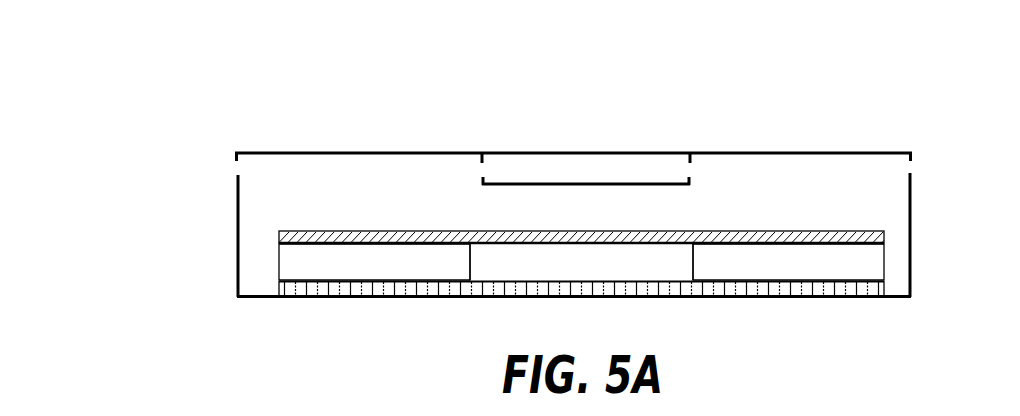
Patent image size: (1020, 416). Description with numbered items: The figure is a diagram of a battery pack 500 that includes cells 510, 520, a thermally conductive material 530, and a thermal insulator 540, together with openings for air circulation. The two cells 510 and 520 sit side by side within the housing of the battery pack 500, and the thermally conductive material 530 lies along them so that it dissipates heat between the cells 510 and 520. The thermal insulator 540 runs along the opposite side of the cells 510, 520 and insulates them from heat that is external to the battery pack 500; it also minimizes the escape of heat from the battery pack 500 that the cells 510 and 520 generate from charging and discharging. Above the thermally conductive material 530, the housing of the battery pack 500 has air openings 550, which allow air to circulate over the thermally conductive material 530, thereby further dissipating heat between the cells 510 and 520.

The battery pack 500 is at (359, 64).
The cell 510 is at (408, 272).
The cell 520 is at (822, 272).
The thermally conductive material 530 is at (279, 237).
The thermal insulator 540 is at (279, 288).
The air openings 550 is at (250, 178).